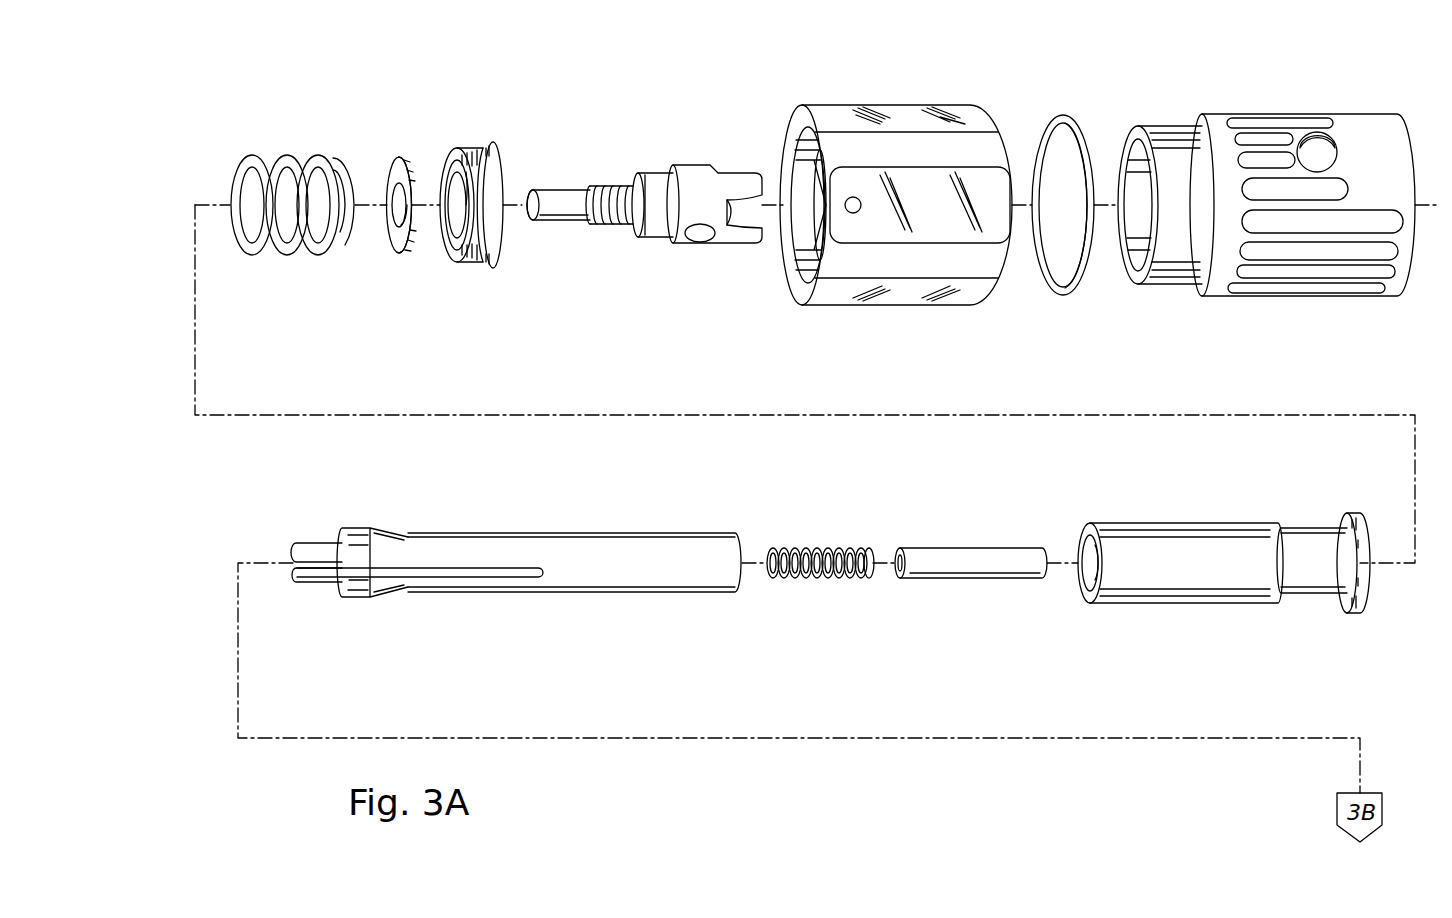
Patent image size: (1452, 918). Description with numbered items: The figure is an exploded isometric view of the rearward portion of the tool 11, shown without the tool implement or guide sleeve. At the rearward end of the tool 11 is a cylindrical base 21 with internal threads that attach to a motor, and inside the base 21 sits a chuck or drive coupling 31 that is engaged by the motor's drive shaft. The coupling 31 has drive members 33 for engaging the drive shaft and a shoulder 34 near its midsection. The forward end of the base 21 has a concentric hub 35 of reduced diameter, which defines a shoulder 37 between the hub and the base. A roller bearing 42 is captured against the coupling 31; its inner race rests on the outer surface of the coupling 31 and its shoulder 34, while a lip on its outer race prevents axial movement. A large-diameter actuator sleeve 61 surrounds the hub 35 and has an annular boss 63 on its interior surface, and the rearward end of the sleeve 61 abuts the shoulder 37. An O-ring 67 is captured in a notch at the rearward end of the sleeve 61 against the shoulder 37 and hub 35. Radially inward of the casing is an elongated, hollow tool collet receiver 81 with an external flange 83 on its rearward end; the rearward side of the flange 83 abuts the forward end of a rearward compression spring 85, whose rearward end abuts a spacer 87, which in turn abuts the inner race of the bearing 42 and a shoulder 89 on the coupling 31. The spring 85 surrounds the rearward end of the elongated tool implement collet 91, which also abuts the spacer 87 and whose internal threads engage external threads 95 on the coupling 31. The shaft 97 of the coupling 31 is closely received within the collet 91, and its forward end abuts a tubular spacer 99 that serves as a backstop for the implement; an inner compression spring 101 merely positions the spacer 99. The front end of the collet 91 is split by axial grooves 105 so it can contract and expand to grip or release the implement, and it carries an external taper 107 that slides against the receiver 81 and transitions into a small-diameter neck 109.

The tool 11 is at (1277, 163).
The cylindrical base 21 is at (1360, 127).
The drive coupling 31 is at (649, 196).
The drive members 33 is at (740, 218).
The shoulder 34 is at (665, 167).
The concentric hub 35 is at (1175, 125).
The shoulder 37 is at (1200, 117).
The roller bearing 42 is at (473, 145).
The actuator sleeve 61 is at (871, 207).
The annular boss 63 is at (793, 268).
The O-ring 67 is at (1053, 120).
The tool collet receiver 81 is at (1157, 540).
The external flange 83 is at (1345, 515).
The rearward compression spring 85 is at (290, 170).
The spacer 87 is at (397, 152).
The shoulder 89 is at (633, 178).
The tool implement collet 91 is at (617, 547).
The external threads 95 is at (603, 225).
The shaft 97 is at (550, 210).
The tubular spacer 99 is at (967, 557).
The inner compression spring 101 is at (840, 545).
The axial grooves 105 is at (490, 565).
The external taper 107 is at (387, 547).
The neck 109 is at (313, 547).